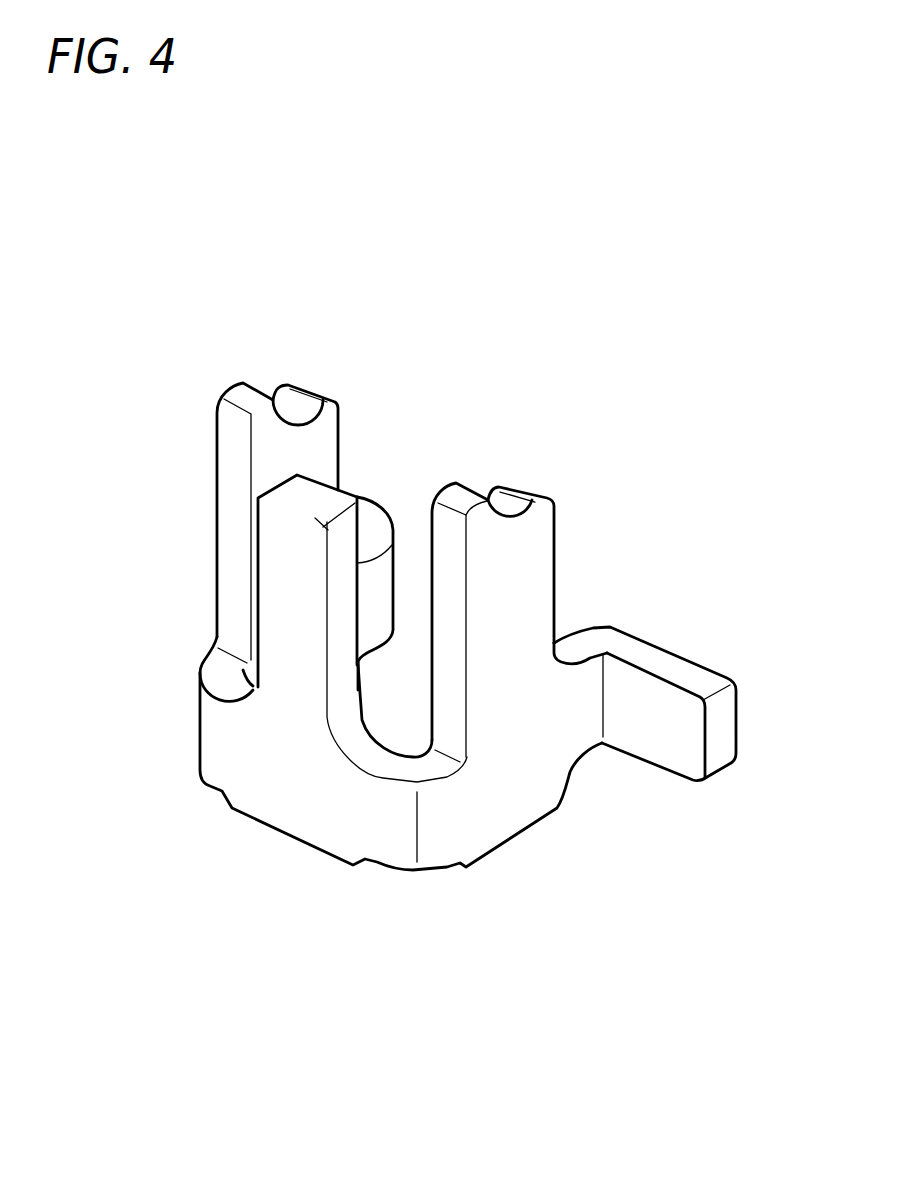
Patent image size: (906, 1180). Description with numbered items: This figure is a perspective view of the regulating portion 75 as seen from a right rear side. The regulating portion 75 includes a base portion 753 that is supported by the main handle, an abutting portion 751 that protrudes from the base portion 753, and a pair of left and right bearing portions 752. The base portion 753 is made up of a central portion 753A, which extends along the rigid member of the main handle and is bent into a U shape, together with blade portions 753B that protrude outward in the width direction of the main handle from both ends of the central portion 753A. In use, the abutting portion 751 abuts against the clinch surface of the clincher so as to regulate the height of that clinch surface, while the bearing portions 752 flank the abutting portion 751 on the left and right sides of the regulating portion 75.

The regulating portion 75 is at (413, 1014).
The abutting portion 751 is at (345, 497).
The bearing portion 752 is at (313, 387).
The base portion 753 is at (680, 647).
The central portion 753A is at (287, 805).
The blade portion 753B is at (657, 768).